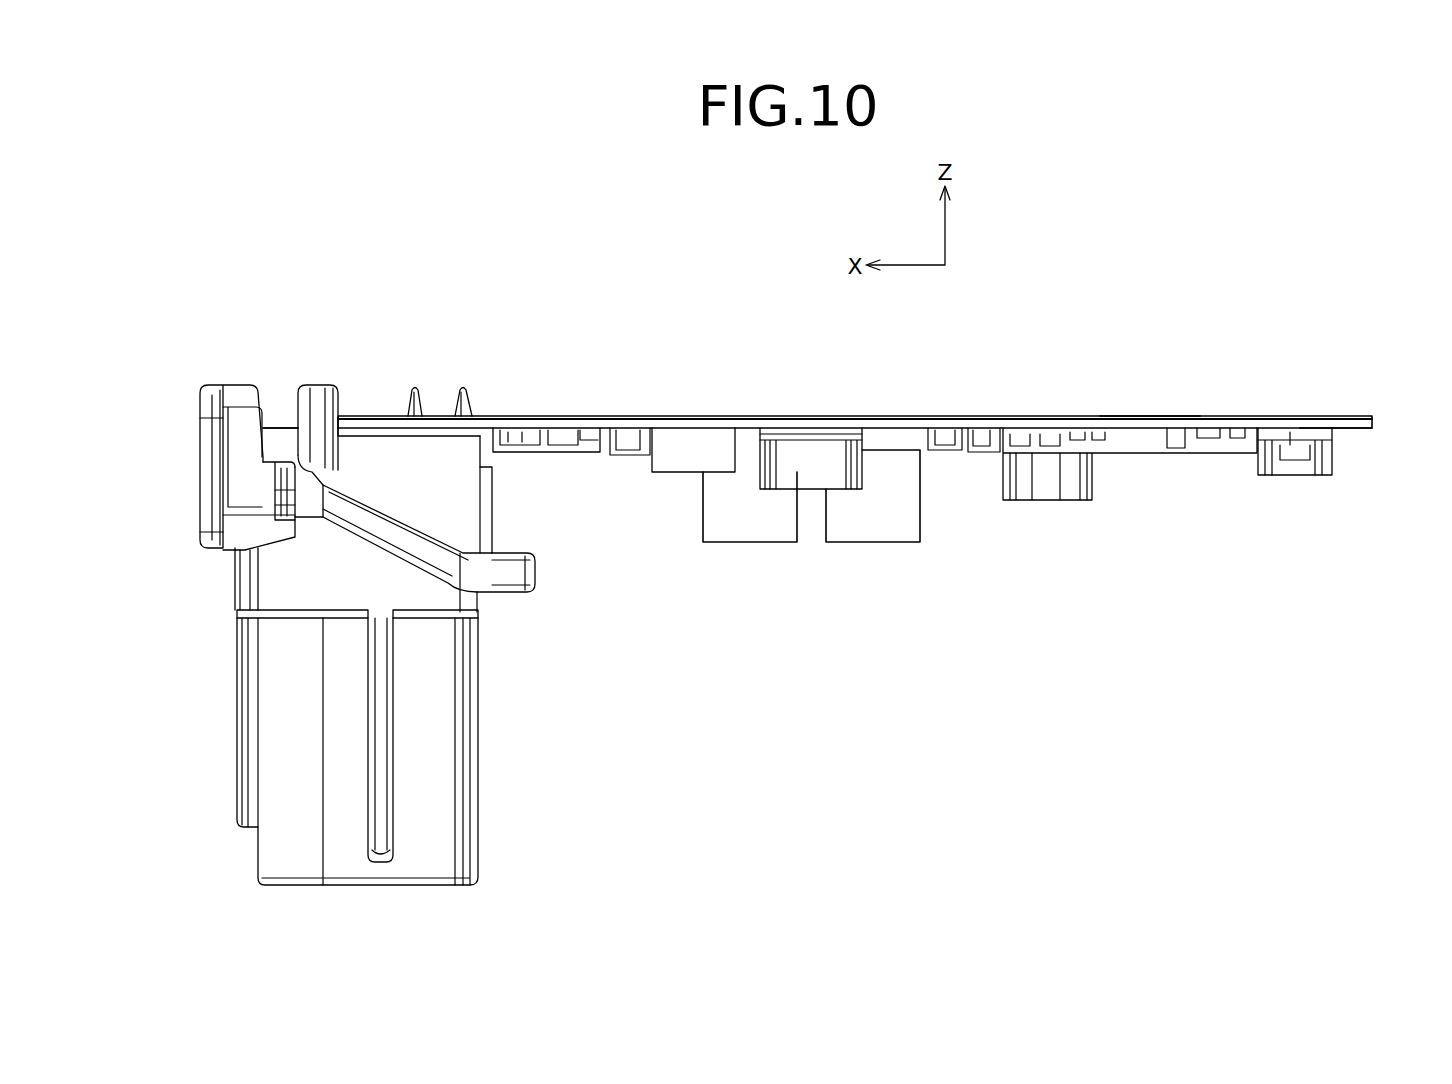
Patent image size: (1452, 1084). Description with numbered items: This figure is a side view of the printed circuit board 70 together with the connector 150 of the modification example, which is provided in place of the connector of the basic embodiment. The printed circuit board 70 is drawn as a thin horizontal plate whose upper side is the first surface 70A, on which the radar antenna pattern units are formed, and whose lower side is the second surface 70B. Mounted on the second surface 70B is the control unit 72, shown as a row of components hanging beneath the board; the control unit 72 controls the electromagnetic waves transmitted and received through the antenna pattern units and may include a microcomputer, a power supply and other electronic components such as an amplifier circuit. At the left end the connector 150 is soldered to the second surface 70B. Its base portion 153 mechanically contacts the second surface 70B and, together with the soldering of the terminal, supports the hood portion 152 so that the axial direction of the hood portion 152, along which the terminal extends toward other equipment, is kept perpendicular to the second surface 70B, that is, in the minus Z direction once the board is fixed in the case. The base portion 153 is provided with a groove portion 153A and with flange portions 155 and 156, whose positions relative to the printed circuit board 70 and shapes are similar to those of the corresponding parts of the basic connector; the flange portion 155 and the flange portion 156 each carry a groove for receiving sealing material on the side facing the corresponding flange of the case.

The printed circuit board 70 is at (878, 420).
The first surface 70A is at (1160, 415).
The second surface 70B is at (1350, 431).
The control unit 72 is at (752, 525).
The connector 150 is at (370, 621).
The hood portion 152 is at (307, 830).
The base portion 153 is at (231, 476).
The groove portion 153A is at (284, 427).
The flange portion 155 is at (350, 567).
The flange portion 156 is at (502, 577).